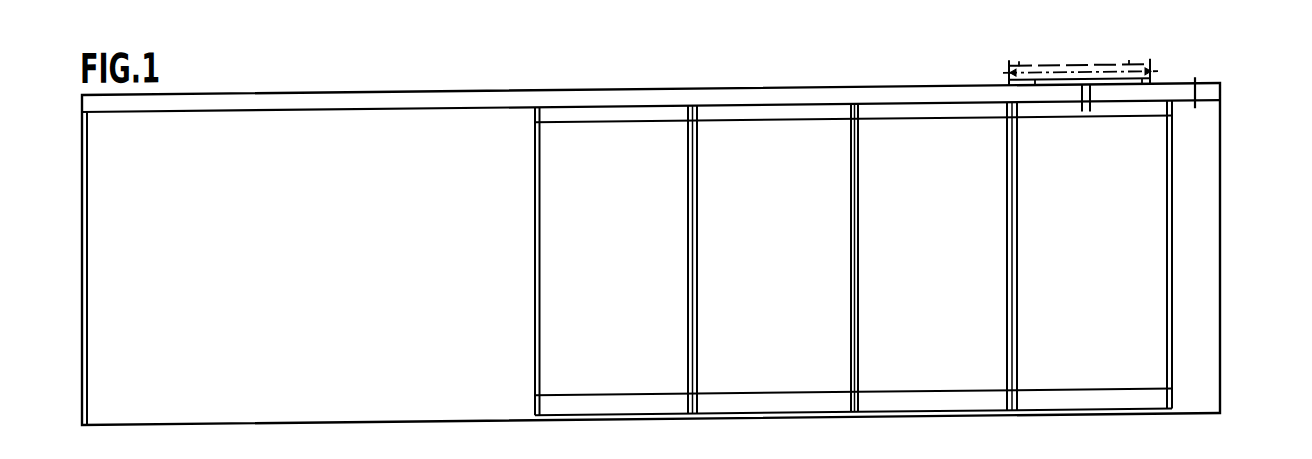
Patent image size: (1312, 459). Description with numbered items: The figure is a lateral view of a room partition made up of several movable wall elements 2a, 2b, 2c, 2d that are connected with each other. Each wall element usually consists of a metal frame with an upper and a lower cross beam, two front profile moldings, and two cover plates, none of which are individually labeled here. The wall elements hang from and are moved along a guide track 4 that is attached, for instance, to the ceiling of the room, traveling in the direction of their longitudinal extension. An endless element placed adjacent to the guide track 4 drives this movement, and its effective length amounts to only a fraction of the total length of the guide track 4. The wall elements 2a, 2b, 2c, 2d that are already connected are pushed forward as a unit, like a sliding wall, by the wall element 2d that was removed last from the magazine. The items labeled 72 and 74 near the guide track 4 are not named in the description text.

The guide track 4 is at (505, 95).
The wall element 2a is at (625, 262).
The wall element 2b is at (773, 263).
The wall element 2c is at (941, 264).
The wall element 2d is at (1091, 266).
The locking pin 72 is at (1198, 102).
The actuating rod 74 is at (1106, 76).